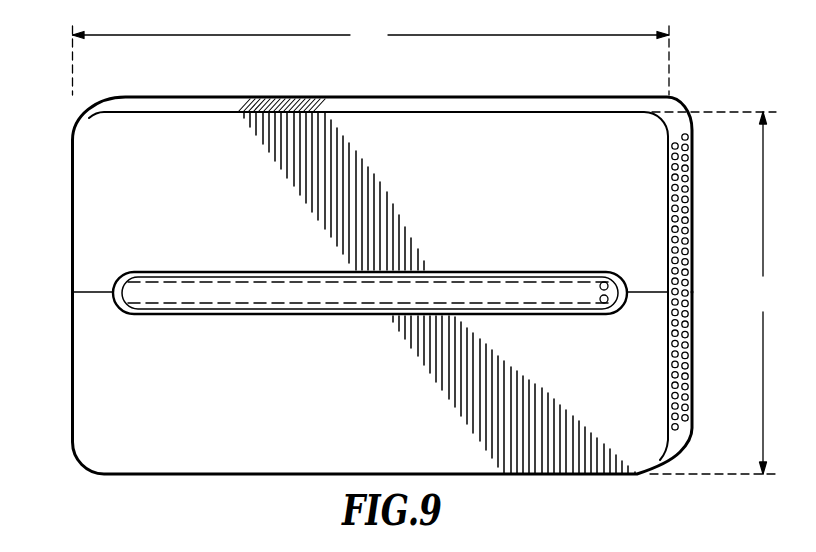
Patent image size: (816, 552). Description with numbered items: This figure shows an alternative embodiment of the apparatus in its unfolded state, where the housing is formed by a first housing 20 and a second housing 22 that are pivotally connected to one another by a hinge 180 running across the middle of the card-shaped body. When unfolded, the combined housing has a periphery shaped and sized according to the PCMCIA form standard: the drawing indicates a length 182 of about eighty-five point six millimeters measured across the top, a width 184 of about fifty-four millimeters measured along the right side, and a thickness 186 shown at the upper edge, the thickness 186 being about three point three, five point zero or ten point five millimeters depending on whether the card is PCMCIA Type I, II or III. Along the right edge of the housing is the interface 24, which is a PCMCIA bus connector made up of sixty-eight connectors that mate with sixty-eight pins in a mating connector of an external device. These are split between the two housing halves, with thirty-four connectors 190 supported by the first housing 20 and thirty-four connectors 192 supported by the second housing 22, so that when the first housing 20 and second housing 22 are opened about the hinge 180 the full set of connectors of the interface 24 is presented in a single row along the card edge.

The first housing 20 is at (72, 146).
The second housing 22 is at (72, 397).
The interface 24 is at (713, 282).
The hinge 180 is at (143, 277).
The length 182 is at (371, 59).
The width 184 is at (713, 293).
The thickness 186 is at (233, 75).
The connectors 190 is at (690, 180).
The connectors 192 is at (690, 367).